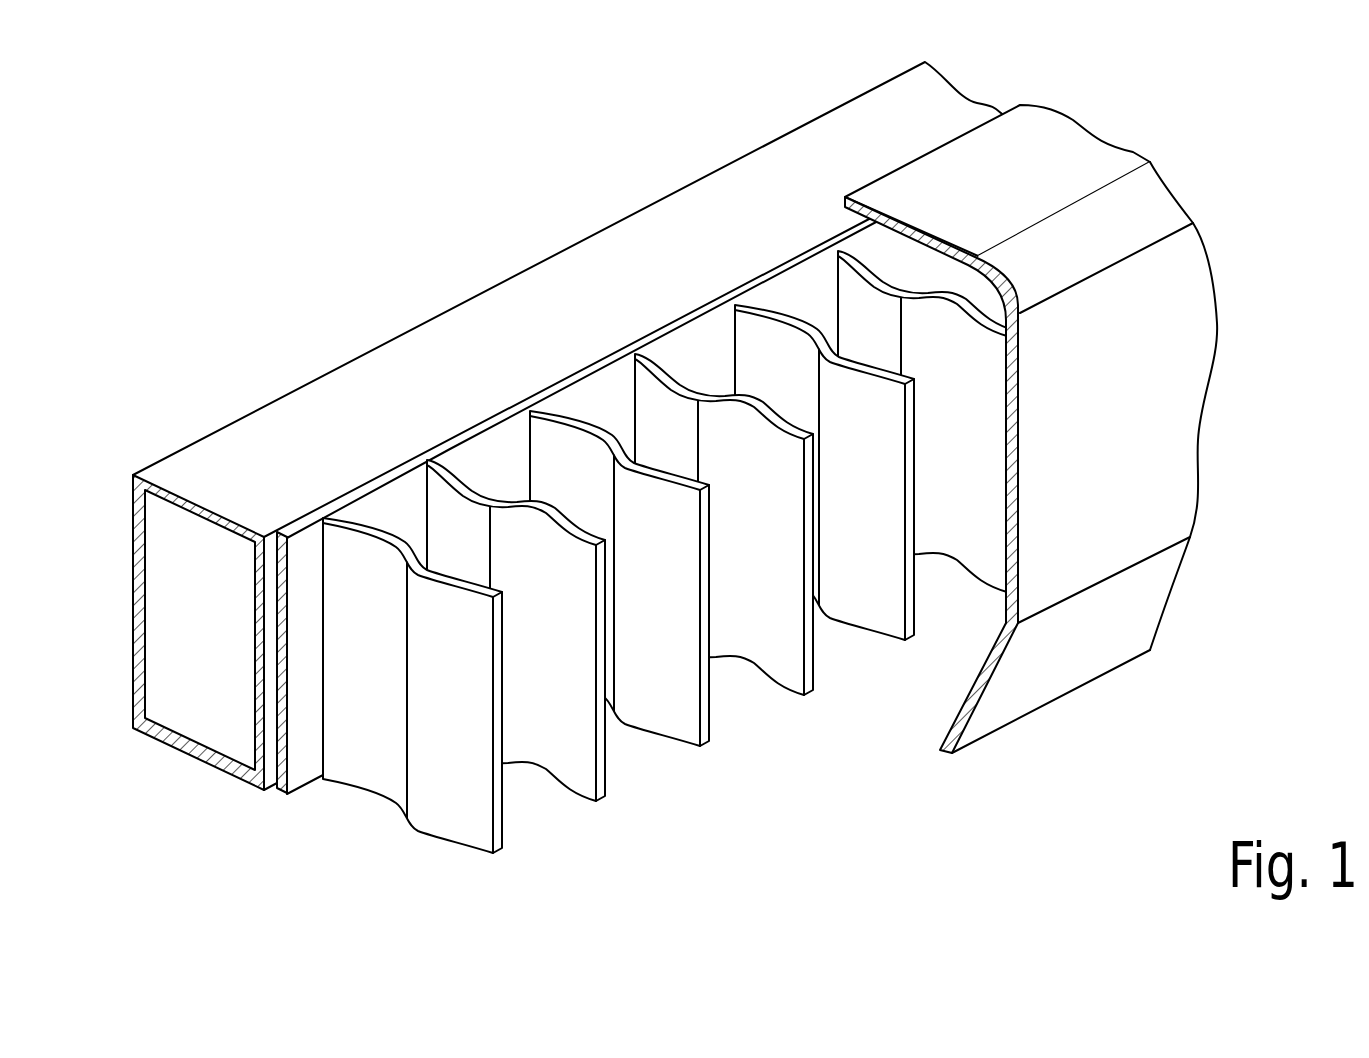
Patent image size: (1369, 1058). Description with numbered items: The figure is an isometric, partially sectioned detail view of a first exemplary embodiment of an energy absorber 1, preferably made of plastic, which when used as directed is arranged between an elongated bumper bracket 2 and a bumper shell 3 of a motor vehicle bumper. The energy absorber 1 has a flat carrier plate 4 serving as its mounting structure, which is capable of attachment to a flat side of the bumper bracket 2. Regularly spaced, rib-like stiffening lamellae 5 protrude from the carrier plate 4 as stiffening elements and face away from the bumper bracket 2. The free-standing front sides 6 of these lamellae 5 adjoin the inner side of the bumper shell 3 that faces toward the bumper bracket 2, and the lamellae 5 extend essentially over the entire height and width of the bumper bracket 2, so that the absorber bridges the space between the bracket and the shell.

The energy absorber 1 is at (729, 494).
The bumper bracket 2 is at (325, 420).
The bumper shell 3 is at (1143, 442).
The carrier plate 4 is at (303, 737).
The stiffening lamellae 5 is at (447, 798).
The front sides 6 is at (502, 772).